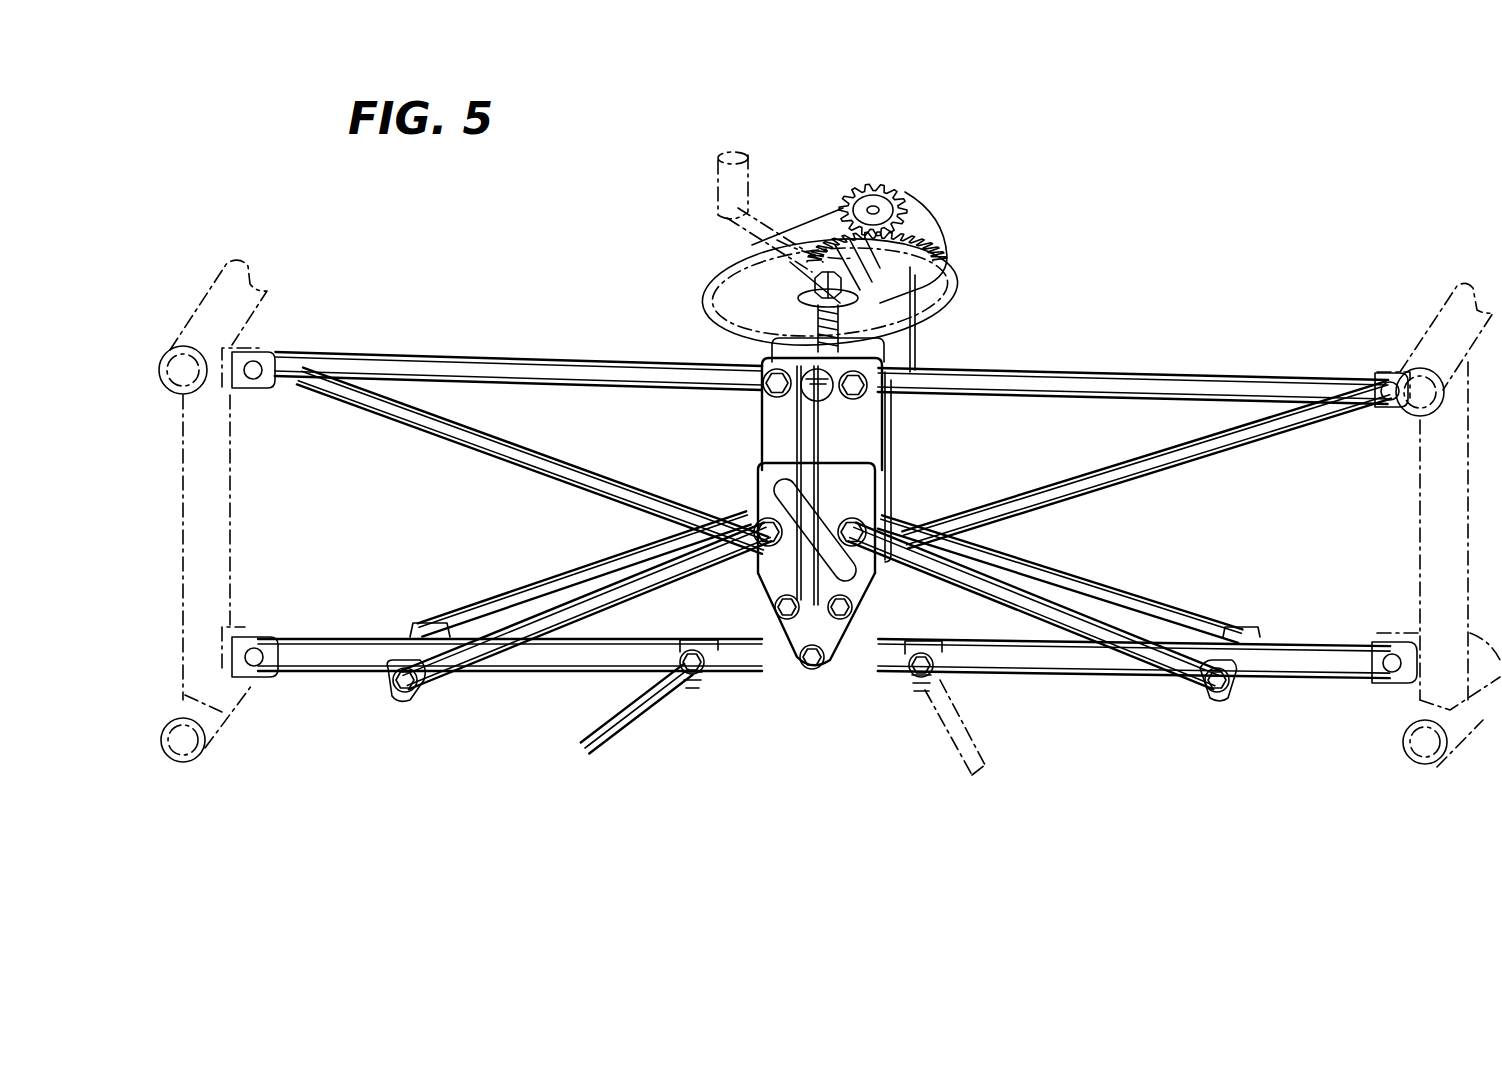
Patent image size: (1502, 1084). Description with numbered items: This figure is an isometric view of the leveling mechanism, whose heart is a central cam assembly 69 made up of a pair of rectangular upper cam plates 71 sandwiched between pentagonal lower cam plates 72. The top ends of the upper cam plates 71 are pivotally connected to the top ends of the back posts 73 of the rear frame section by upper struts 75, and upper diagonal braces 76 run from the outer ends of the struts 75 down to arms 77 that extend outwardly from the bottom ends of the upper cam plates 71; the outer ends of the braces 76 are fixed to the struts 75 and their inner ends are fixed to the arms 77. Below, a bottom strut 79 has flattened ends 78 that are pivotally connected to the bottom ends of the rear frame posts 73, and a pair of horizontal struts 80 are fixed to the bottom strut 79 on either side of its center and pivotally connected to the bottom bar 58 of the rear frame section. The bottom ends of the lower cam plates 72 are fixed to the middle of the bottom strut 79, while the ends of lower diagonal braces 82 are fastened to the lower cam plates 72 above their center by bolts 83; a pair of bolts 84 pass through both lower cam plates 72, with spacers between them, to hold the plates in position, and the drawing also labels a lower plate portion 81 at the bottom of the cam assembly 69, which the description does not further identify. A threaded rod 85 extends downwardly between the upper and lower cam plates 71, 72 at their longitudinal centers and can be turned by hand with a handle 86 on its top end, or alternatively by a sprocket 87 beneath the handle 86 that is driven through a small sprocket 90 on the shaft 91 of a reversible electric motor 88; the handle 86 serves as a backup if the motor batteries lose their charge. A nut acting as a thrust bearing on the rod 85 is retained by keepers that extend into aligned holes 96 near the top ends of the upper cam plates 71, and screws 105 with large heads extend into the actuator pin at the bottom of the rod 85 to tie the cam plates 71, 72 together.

The bottom bar 58 is at (198, 758).
The central cam assembly 69 is at (818, 672).
The upper cam plates 71 is at (880, 405).
The lower cam plates 72 is at (867, 477).
The back post 73 is at (232, 455).
The upper struts 75 is at (498, 368).
The upper diagonal braces 76 is at (530, 453).
The arms 77 is at (720, 527).
The flattened ends 78 is at (258, 673).
The bottom strut 79 is at (1257, 670).
The horizontal struts 80 is at (612, 733).
The mounting plate 81 is at (800, 633).
The lower diagonal braces 82 is at (523, 627).
The bolts 83 is at (760, 543).
The bolts 84 is at (787, 612).
The threaded rod 85 is at (805, 300).
The handle 86 is at (745, 160).
The sprocket 87 is at (928, 262).
The electric motor 88 is at (902, 318).
The small sprocket 90 is at (912, 196).
The shaft 91 is at (878, 203).
The holes 96 is at (818, 395).
The screws 105 is at (827, 520).